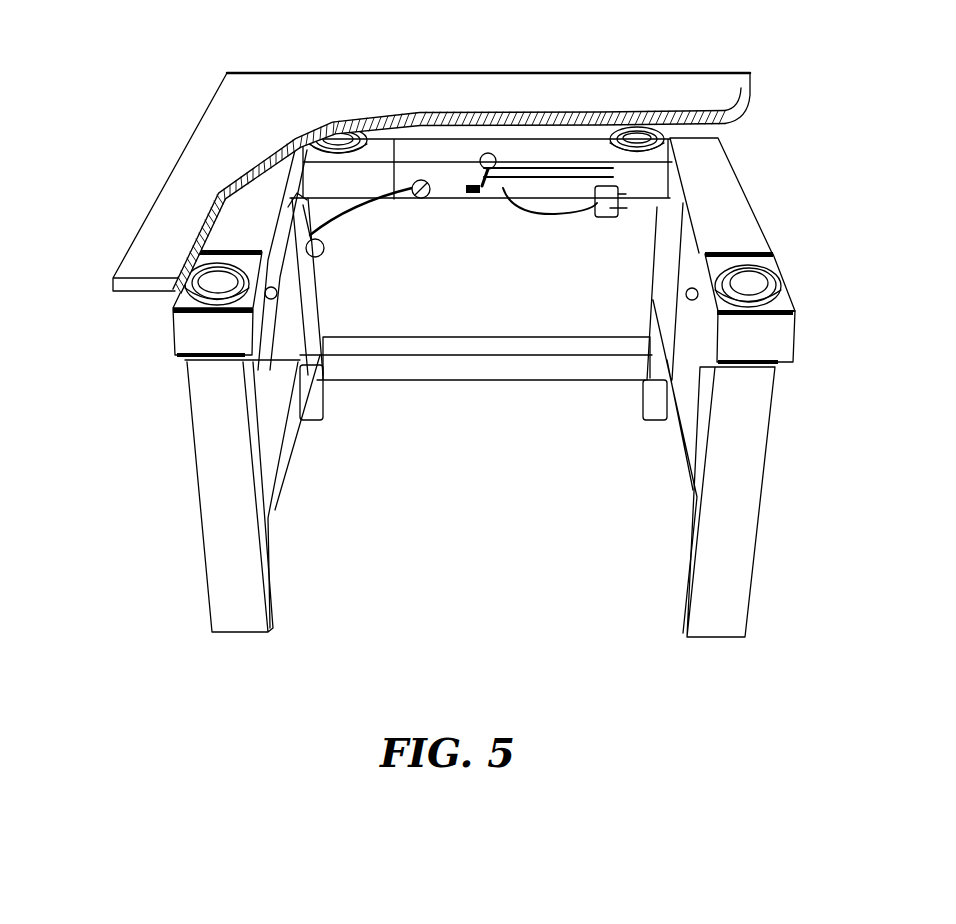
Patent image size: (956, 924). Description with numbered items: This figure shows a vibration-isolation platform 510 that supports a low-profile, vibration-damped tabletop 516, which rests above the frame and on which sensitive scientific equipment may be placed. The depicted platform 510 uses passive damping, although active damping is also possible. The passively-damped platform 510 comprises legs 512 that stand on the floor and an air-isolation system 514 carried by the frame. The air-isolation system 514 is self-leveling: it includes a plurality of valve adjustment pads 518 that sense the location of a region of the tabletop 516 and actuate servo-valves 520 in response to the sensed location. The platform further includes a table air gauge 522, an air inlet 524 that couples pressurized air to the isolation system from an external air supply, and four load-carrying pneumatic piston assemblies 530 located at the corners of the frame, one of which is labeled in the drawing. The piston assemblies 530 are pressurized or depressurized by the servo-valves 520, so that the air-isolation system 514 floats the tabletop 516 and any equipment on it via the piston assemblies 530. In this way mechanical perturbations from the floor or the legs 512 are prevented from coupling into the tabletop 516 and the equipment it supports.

The vibration-isolation platform 510 is at (438, 382).
The legs 512 is at (273, 510).
The air-isolation system 514 is at (162, 340).
The tabletop 516 is at (197, 123).
The valve adjustment pads 518 is at (477, 197).
The servo-valves 520 is at (588, 218).
The table air gauge 522 is at (420, 201).
The air inlet 524 is at (323, 255).
The load-carrying pneumatic piston assemblies 530 is at (772, 281).